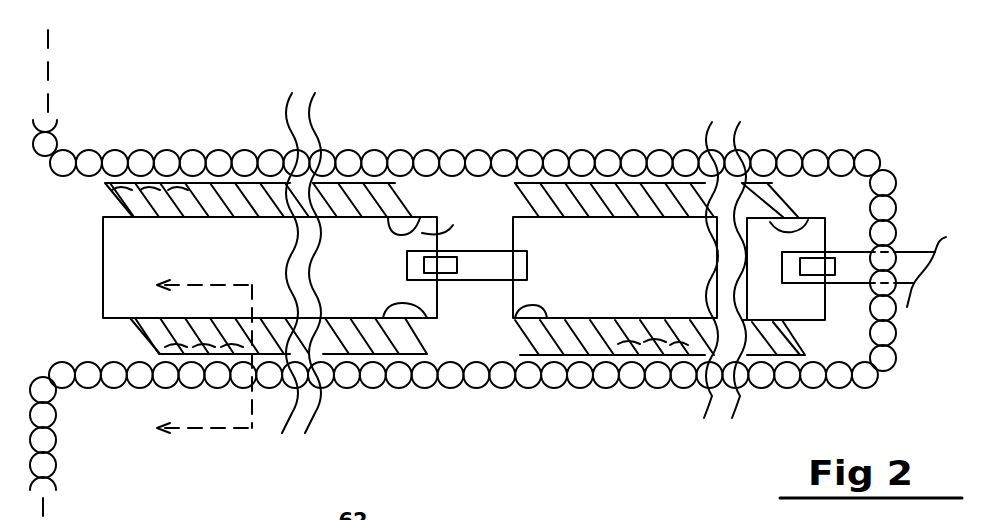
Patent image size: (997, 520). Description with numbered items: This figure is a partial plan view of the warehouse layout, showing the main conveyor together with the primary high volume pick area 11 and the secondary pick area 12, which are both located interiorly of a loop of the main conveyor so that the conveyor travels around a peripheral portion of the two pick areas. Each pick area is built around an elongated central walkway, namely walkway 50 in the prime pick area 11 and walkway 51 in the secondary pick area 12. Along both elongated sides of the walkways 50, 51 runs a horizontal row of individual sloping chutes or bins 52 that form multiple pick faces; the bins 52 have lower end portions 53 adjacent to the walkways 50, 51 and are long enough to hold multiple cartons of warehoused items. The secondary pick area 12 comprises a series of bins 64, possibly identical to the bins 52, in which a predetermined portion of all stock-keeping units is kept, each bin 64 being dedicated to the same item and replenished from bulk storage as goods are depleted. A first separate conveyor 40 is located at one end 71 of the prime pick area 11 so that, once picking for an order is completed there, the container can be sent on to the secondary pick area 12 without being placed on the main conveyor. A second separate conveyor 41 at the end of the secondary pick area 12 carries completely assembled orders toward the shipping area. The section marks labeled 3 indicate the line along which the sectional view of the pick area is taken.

The primary high volume pick area 11 is at (197, 235).
The secondary pick area 12 is at (753, 232).
The first separate conveyor 40 is at (478, 265).
The second separate conveyor 41 is at (850, 265).
The elongated central walkway 50 is at (262, 227).
The elongated central walkway 51 is at (558, 247).
The sloping chutes or bins 52 is at (175, 188).
The lower end portions 53 is at (420, 218).
The bins 64 is at (685, 200).
The end of the prime pick area 71 is at (453, 225).
The section line 3- 3 is at (192, 357).